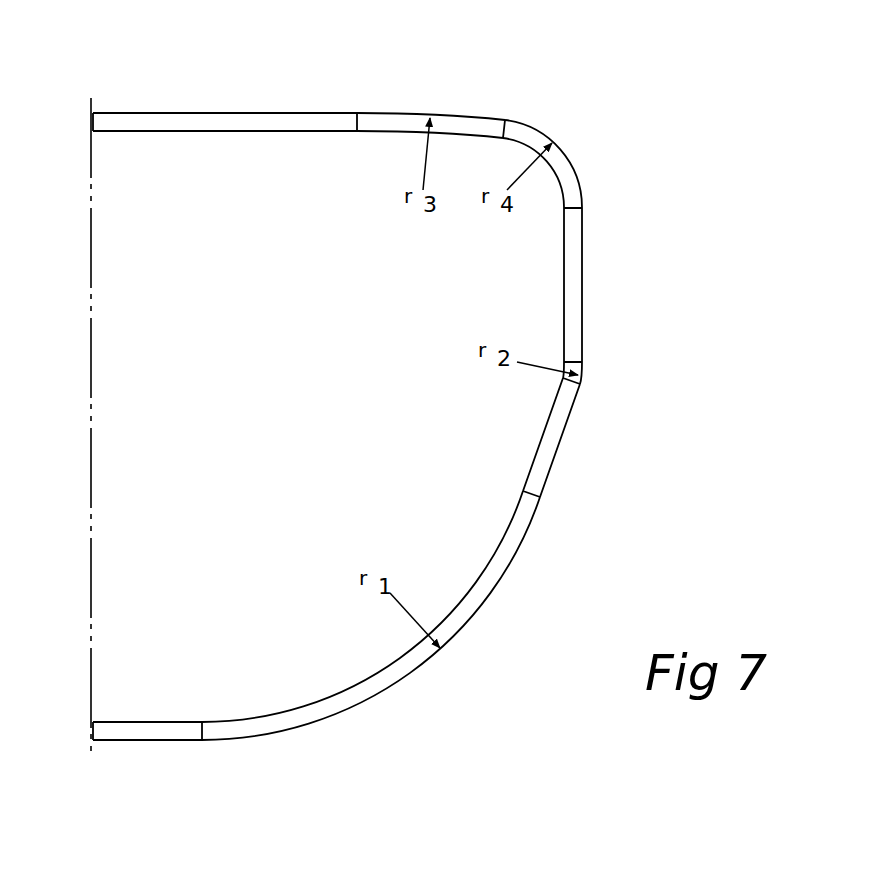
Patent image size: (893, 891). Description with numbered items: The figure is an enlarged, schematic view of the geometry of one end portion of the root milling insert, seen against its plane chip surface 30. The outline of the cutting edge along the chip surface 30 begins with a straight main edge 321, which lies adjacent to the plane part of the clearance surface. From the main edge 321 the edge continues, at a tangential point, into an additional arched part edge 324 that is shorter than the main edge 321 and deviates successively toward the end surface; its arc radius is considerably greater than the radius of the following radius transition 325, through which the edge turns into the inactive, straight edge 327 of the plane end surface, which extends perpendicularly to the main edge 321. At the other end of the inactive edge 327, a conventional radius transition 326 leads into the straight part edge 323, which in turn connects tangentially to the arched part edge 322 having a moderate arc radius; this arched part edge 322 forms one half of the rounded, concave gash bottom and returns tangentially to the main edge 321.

The chip surface 30 is at (262, 416).
The straight main edge 321 is at (260, 112).
The arched part edge 322 is at (488, 593).
The straight part edge 323 is at (560, 445).
The part edge 324 is at (418, 113).
The radius transition 325 is at (570, 162).
The radius transition 326 is at (578, 383).
The inactive straight edge 327 is at (582, 292).